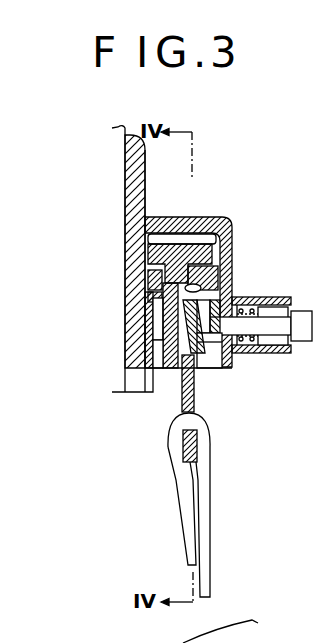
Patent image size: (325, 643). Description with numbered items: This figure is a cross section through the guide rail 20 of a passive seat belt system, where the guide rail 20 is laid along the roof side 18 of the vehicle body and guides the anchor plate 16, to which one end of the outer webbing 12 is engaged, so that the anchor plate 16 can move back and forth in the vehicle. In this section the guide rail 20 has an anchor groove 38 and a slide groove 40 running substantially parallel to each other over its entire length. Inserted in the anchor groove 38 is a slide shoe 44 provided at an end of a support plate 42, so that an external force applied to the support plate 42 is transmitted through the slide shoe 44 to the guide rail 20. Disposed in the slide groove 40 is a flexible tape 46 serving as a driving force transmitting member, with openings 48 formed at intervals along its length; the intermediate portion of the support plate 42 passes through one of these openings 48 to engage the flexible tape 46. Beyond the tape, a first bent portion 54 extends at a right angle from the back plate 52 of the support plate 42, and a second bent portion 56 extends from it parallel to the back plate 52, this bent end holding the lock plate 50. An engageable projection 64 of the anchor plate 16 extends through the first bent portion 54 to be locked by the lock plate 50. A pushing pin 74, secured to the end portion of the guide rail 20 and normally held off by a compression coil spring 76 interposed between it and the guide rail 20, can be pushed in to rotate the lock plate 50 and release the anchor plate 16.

The outer webbing 12 is at (206, 520).
The anchor plate 16 is at (198, 399).
The roof side 18 is at (146, 259).
The guide rail 20 is at (237, 241).
The anchor groove 38 is at (124, 231).
The slide groove 40 is at (124, 284).
The support plate 42 is at (124, 333).
The slide shoe 44 is at (124, 256).
The flexible tape 46 is at (235, 297).
The openings 48 is at (124, 296).
The lock plate 50 is at (153, 372).
The back plate 52 is at (136, 345).
The first bent portion 54 is at (178, 368).
The second bent portion 56 is at (204, 375).
The engageable projection 64 is at (156, 328).
The pushing pins 74 is at (253, 327).
The compression coil spring 76 is at (251, 355).